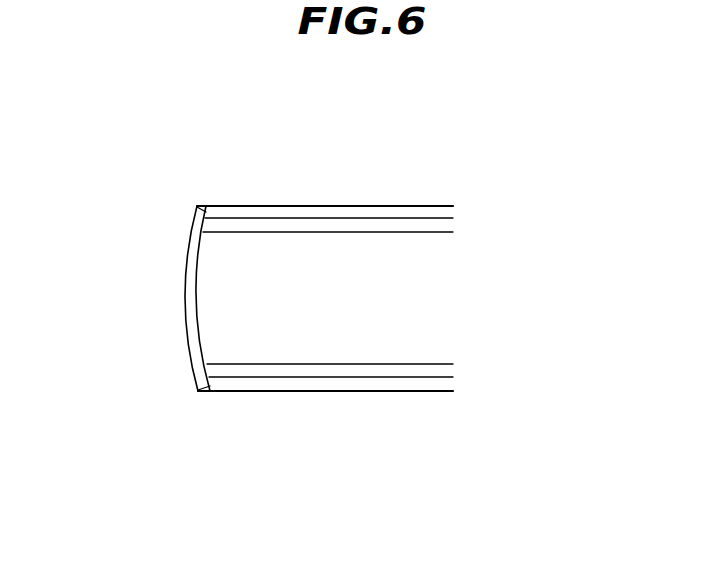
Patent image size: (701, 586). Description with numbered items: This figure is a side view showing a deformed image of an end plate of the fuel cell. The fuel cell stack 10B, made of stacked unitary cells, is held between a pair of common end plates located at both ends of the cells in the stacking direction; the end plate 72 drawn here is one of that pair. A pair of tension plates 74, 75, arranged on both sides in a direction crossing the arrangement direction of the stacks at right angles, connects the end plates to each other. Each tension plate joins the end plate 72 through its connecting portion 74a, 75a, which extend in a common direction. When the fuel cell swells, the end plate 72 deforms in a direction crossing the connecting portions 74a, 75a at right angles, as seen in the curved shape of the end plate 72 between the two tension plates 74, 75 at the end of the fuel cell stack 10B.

The tension plate 74 is at (418, 205).
The tension plate 75 is at (412, 393).
The end plate 72 is at (188, 292).
The connecting portion 74a is at (200, 207).
The connecting portion 75a is at (193, 385).
The fuel cell stack 10B is at (313, 350).